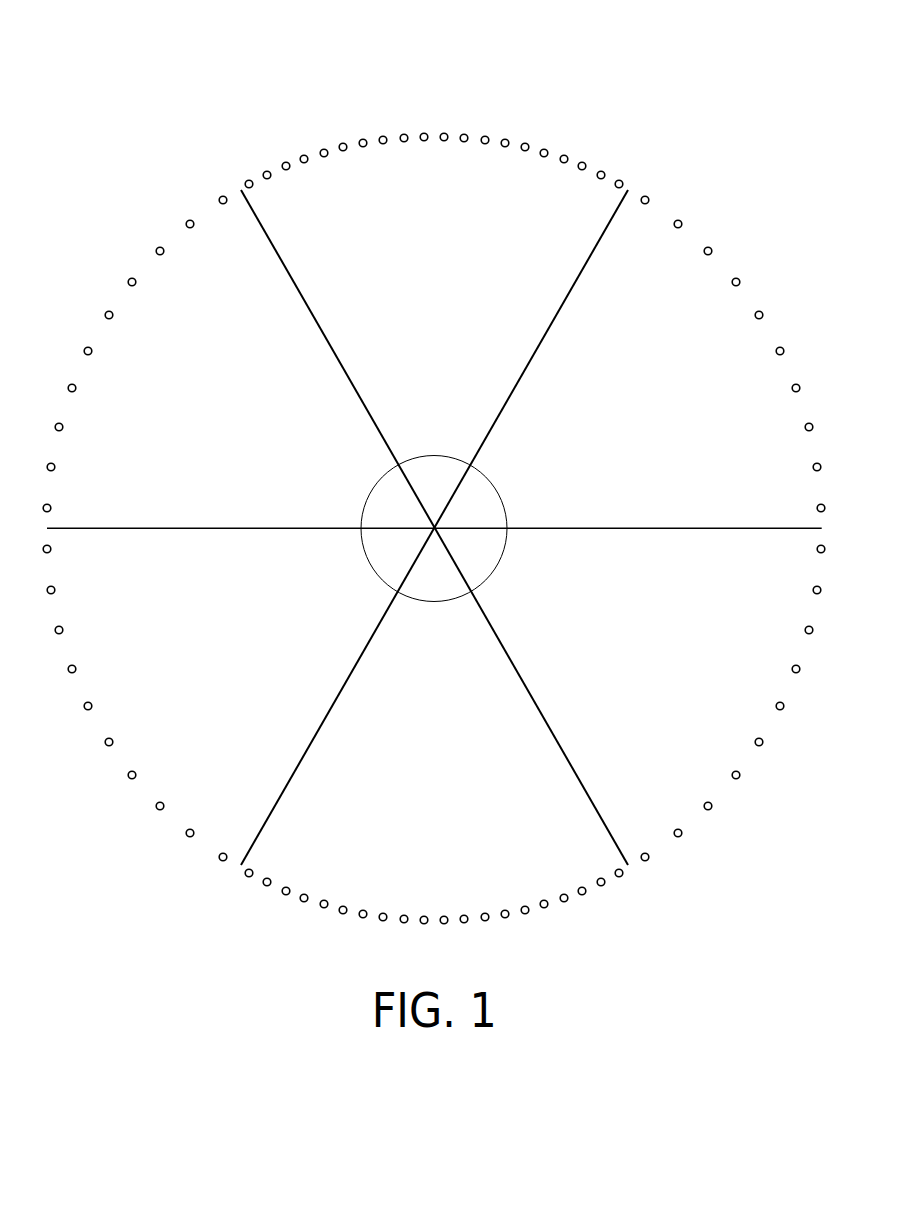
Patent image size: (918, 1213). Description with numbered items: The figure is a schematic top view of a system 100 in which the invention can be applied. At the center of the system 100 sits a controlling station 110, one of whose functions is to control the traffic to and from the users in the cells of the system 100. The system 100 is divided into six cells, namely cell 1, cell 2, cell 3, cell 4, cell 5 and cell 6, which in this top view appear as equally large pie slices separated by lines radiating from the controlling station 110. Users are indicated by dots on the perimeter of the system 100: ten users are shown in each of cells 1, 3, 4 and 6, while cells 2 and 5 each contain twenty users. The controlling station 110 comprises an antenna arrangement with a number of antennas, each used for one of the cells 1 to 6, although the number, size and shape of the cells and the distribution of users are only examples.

The system 100 is at (434, 443).
The controlling station 110 is at (597, 404).
The cell 1 is at (713, 354).
The cell 2 is at (434, 240).
The cell 3 is at (157, 354).
The cell 4 is at (157, 703).
The cell 5 is at (434, 819).
The cell 6 is at (714, 703).